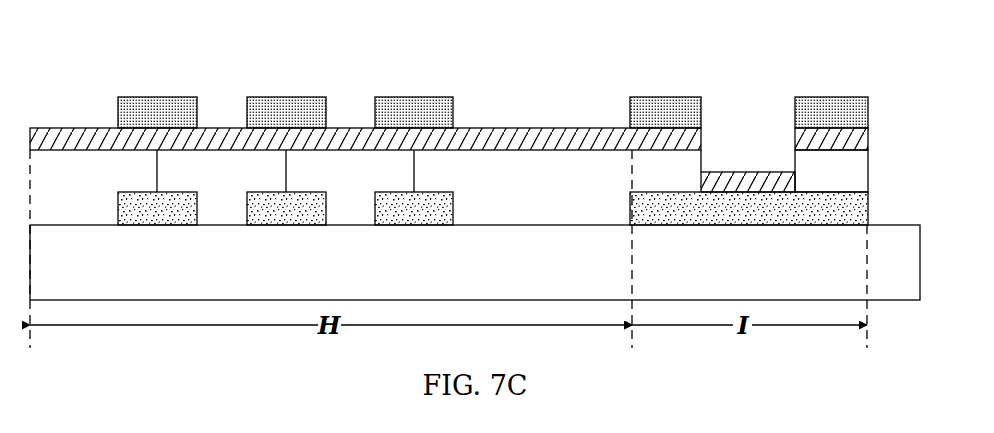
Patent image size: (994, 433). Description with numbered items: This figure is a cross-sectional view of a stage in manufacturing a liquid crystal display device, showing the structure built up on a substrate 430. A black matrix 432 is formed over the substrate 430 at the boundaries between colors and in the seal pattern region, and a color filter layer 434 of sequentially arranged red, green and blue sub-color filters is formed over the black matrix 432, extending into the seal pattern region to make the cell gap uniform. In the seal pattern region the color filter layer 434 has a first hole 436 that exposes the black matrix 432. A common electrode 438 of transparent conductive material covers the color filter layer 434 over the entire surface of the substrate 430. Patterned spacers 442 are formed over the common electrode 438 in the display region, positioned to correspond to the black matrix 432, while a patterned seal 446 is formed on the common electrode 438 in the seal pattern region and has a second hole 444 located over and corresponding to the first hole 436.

The substrate 430 is at (127, 278).
The black matrix 432 is at (183, 225).
The color filter layer 434 is at (52, 163).
The first hole 436 is at (725, 163).
The common electrode 438 is at (95, 128).
The patterned spacers 442 is at (157, 103).
The second hole 444 is at (757, 113).
The patterned seal 446 is at (668, 104).